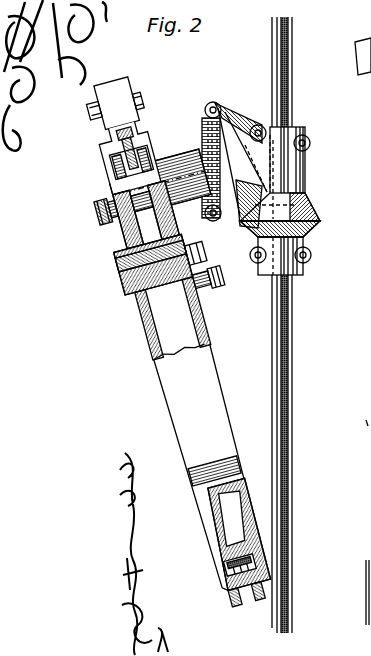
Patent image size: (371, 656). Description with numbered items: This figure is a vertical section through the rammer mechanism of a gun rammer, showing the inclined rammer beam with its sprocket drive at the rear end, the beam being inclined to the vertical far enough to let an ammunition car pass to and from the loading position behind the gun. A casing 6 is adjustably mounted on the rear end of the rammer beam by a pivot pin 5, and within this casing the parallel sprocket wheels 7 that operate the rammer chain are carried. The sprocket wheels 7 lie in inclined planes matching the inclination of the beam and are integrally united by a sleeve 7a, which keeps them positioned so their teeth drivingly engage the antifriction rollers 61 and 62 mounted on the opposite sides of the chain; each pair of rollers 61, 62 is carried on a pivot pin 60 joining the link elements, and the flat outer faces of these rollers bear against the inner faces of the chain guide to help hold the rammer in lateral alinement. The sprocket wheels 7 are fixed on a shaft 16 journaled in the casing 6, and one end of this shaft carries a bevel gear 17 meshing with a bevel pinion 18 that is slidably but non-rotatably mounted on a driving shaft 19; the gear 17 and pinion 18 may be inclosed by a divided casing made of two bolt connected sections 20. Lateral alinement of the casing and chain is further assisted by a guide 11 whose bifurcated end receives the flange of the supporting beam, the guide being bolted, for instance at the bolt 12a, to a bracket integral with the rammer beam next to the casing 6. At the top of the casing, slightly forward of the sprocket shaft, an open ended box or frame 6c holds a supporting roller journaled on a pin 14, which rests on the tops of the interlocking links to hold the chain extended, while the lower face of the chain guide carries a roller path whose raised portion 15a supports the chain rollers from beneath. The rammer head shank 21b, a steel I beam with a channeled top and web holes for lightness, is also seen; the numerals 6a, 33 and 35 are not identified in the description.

The pivot pin 5 is at (122, 278).
The casing 6 is at (130, 236).
The yoke 6a is at (105, 157).
The open ended box or frame 6c is at (100, 97).
The sprocket wheels 7 is at (172, 224).
The sleeve 7a is at (137, 248).
The guide 11 is at (212, 289).
The bolt 12a is at (220, 283).
The pin or shaft 14 is at (142, 103).
The raised portion of the roller path 15a is at (123, 178).
The shaft 16 is at (95, 208).
The bevel gear 17 is at (256, 145).
The bevel pinion 18 is at (318, 212).
The driving shaft 19 is at (289, 443).
The casing sections 20 is at (293, 181).
The rammer head shank 21b is at (128, 157).
The rail mark 33 is at (361, 365).
The plate 35 is at (363, 82).
The pivot pin 60 is at (370, 645).
The antifriction roller 61 is at (100, 178).
The antifriction roller 62 is at (150, 143).